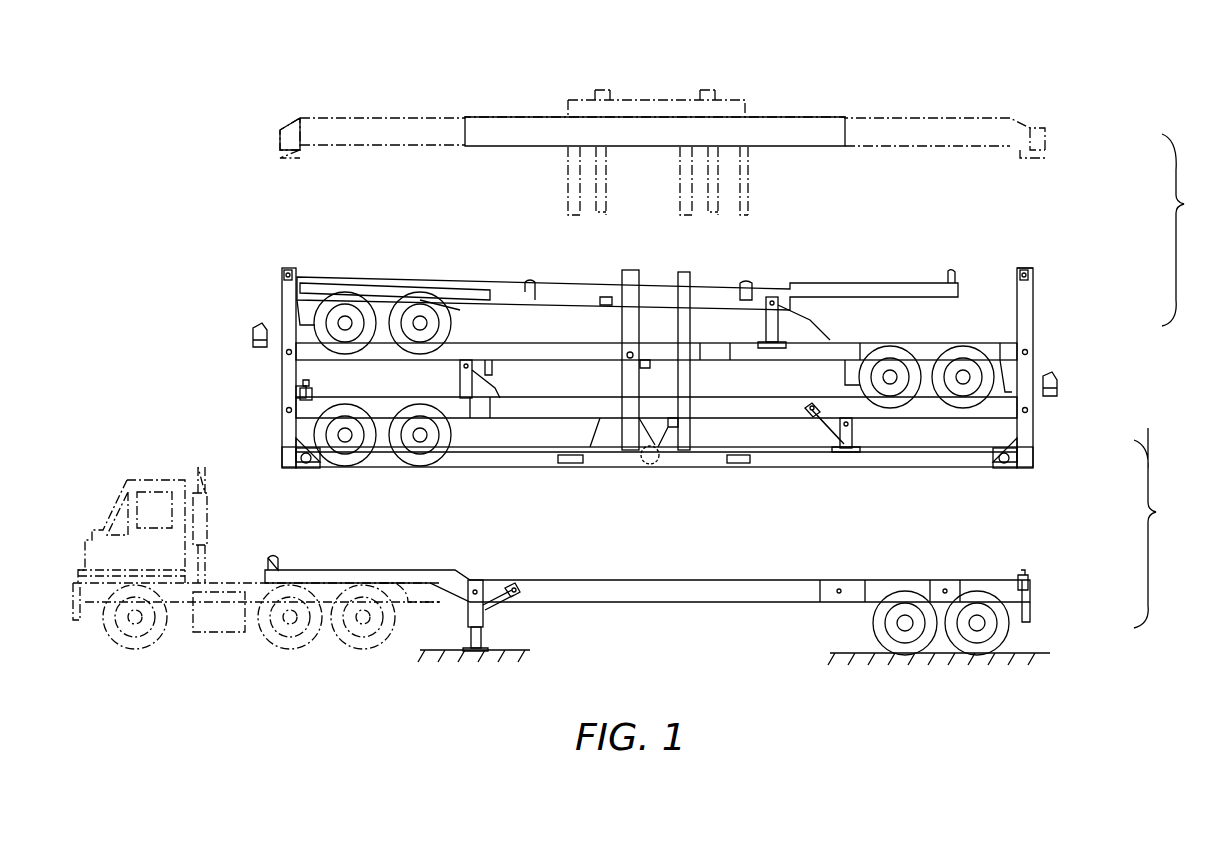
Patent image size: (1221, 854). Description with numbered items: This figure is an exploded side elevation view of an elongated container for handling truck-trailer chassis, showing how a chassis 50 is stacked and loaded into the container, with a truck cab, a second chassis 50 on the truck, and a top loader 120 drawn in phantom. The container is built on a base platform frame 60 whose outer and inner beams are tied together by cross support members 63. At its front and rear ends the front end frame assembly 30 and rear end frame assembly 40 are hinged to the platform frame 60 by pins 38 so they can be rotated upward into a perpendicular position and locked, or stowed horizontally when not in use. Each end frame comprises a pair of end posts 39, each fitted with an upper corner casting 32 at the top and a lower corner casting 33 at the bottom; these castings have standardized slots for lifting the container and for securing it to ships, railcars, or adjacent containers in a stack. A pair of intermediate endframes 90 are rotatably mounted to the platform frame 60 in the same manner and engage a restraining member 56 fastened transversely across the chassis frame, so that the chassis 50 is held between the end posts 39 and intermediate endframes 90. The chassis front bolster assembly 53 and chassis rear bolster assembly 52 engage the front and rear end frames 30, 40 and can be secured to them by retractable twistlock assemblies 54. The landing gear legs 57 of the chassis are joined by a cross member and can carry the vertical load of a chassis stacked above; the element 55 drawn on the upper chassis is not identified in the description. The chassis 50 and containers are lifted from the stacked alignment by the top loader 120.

The top loader 120 is at (555, 147).
The front end frame assembly 30 is at (280, 292).
The upper corner casting 32 is at (287, 268).
The lower corner casting 33 is at (292, 446).
The pins 38 is at (302, 450).
The end posts 39 is at (282, 312).
The rear end frame assembly 40 is at (1048, 300).
The chassis 50 is at (712, 288).
The chassis rear bolster assembly 52 is at (296, 392).
The chassis front bolster assembly 53 is at (255, 336).
The retractable twistlock assemblies 54 is at (316, 390).
The upper chassis bracket 55 is at (528, 282).
The restraining member 56 is at (605, 300).
The landing gear legs 57 is at (796, 326).
The platform frame 60 is at (930, 440).
The cross support members 63 is at (570, 464).
The intermediate endframes 90 is at (617, 292).